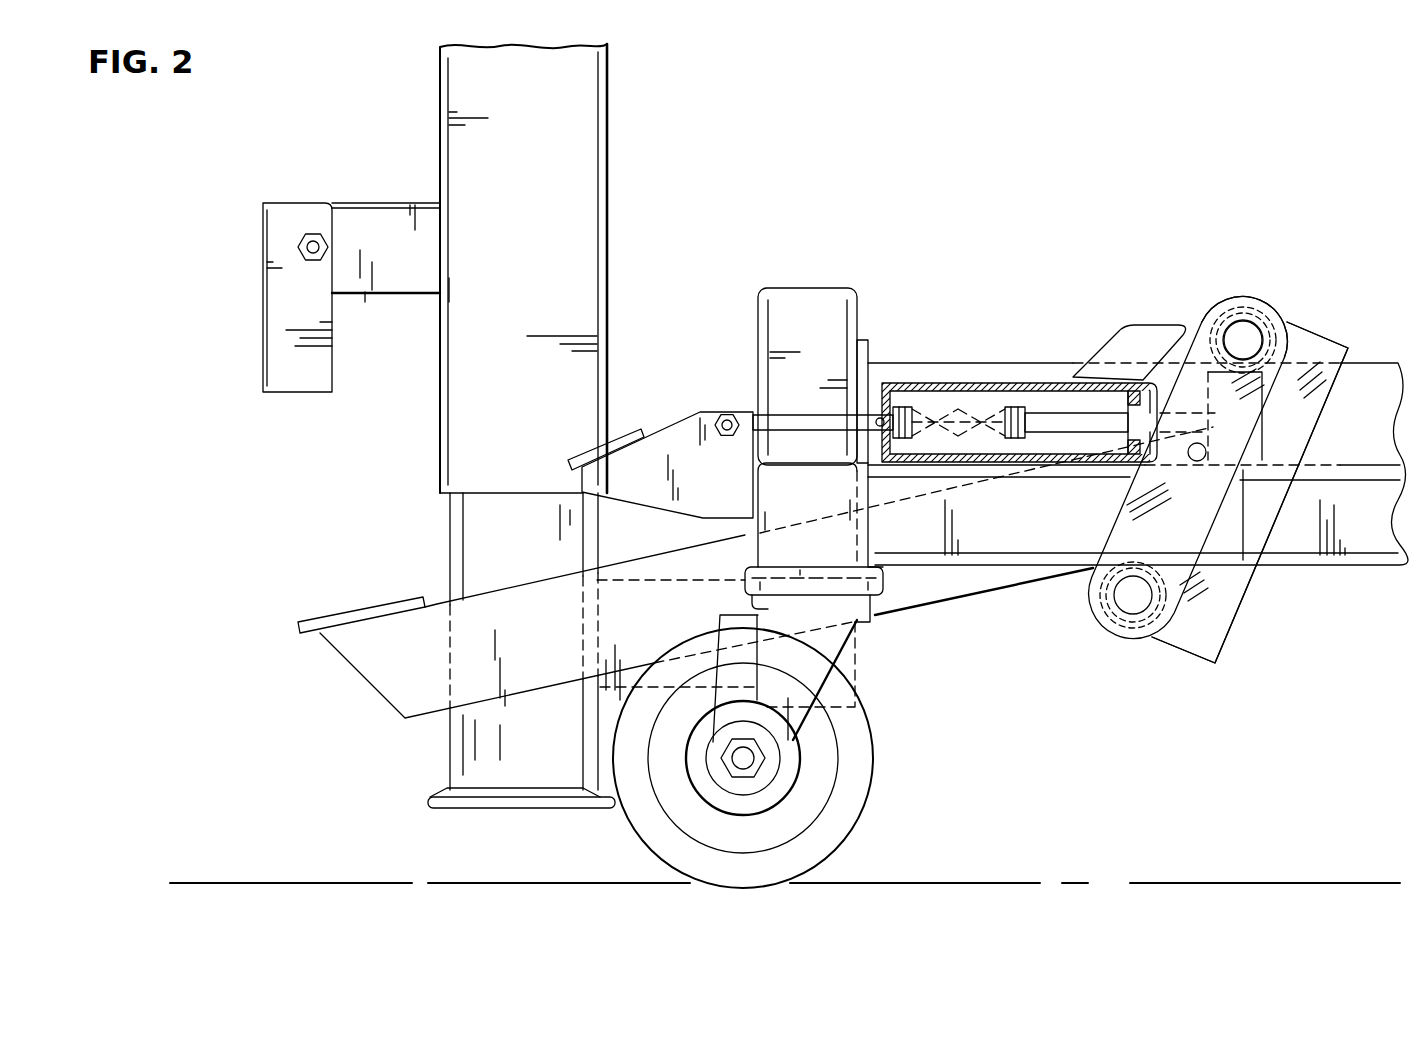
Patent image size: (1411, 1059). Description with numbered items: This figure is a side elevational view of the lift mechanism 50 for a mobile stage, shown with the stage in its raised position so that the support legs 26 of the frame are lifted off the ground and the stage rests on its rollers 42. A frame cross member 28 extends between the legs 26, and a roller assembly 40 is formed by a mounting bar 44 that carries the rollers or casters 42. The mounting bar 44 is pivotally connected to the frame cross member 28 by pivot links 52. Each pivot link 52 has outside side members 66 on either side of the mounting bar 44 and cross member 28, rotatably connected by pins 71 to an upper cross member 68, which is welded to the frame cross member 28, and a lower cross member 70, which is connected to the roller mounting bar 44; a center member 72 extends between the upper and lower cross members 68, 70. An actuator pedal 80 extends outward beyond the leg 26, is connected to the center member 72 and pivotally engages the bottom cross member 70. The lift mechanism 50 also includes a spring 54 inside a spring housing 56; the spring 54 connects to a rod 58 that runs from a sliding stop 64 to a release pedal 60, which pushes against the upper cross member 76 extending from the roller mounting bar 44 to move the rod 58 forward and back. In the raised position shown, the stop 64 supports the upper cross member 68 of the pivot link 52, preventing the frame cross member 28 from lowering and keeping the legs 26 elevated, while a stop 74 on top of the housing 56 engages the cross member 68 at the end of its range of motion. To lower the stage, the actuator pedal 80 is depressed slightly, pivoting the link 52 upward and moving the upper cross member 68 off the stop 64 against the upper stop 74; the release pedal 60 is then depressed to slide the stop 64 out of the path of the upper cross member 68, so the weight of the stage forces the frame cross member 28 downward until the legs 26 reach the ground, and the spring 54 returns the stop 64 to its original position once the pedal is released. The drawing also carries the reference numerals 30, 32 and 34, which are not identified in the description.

The support legs 26 is at (588, 150).
The frame cross member 28 is at (1003, 362).
The lower post 30 is at (458, 534).
The mounting bracket 32 is at (290, 213).
The scraper arm 34 is at (617, 687).
The roller assembly 40 is at (1017, 232).
The rollers 42 is at (866, 735).
The mounting bar 44 is at (1306, 562).
The lift mechanism 50 is at (808, 233).
The pivot links 52 is at (1312, 307).
The spring 54 is at (897, 390).
The spring housing 56 is at (1050, 388).
The rod 58 is at (793, 415).
The release pedal 60 is at (626, 432).
The sliding stop 64 is at (1252, 447).
The side members 66 is at (1214, 288).
The upper cross member 68 is at (1260, 292).
The lower cross member 70 is at (1095, 625).
The pins 71 is at (1243, 340).
The center member 72 is at (1220, 628).
The stop 74 is at (1128, 326).
The upper cross member 76 is at (770, 515).
The actuator pedal 80 is at (340, 612).